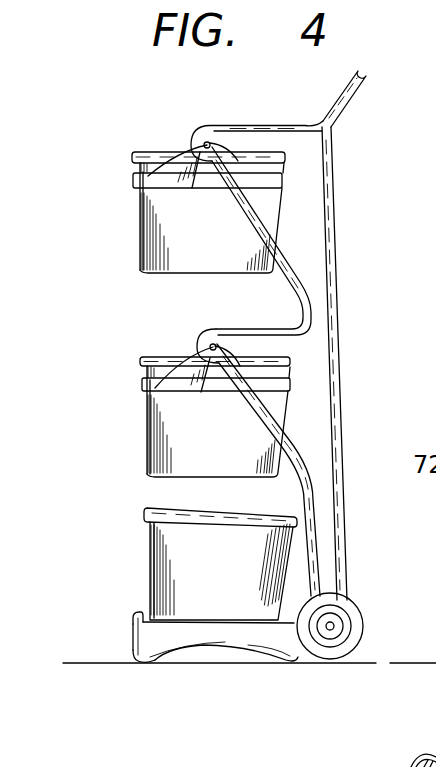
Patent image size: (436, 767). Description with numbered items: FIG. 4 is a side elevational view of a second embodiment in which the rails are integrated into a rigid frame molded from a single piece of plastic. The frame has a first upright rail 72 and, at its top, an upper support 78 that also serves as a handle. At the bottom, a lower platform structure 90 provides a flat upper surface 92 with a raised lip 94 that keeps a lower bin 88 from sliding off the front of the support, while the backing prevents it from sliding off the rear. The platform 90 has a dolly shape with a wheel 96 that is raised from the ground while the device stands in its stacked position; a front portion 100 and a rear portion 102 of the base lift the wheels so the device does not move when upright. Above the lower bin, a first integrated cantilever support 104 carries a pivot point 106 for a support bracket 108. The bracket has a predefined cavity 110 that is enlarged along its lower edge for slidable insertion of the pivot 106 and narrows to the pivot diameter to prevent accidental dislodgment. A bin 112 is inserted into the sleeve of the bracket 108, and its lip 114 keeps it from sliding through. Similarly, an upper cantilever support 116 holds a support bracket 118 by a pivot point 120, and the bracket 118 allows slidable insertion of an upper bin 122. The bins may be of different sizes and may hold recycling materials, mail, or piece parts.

The first upright rail 72 is at (310, 415).
The upper support 78 is at (363, 74).
The lower bin 88 is at (223, 607).
The lower platform structure 90 is at (130, 632).
The flat upper surface 92 is at (192, 617).
The raised lip 94 is at (137, 610).
The wheel 96 is at (435, 624).
The front portion 100 is at (140, 662).
The rear portion 102 is at (310, 653).
The first integrated cantilever support 104 is at (270, 355).
The pivot point 106 is at (208, 335).
The support bracket 108 is at (140, 387).
The predefined cavity 110 is at (207, 396).
The bin 112 is at (180, 462).
The lip 114 is at (137, 358).
The upper cantilever support 116 is at (275, 150).
The support bracket 118 is at (132, 180).
The pivot point 120 is at (195, 132).
The bin 122 is at (163, 220).